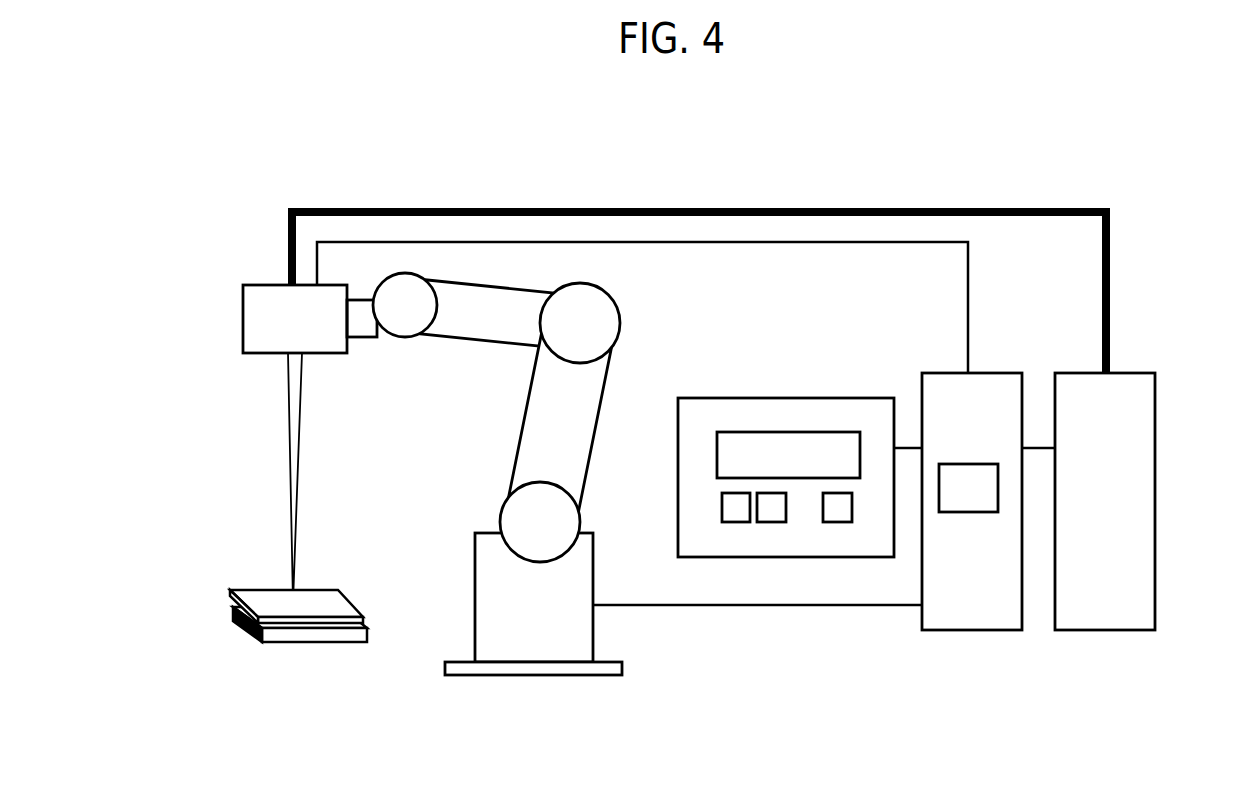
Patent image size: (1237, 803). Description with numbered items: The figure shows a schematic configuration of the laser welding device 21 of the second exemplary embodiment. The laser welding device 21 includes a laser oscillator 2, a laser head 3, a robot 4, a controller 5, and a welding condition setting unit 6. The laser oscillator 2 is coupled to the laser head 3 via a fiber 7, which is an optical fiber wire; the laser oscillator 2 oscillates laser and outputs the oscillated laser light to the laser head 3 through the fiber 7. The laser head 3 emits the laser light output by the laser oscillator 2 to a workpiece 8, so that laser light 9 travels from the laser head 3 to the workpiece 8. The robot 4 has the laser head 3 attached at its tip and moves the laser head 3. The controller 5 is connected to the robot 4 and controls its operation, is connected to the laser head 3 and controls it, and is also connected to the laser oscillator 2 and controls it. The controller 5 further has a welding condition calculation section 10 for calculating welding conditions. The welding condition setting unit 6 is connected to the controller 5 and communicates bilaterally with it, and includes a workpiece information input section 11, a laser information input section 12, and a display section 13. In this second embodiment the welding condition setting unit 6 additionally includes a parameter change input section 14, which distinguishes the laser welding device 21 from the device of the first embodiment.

The laser oscillator 2 is at (1137, 372).
The laser head 3 is at (260, 283).
The robot 4 is at (630, 320).
The controller 5 is at (1003, 372).
The welding condition setting unit 6 is at (859, 397).
The fiber 7 is at (702, 208).
The workpiece 8 is at (218, 592).
The laser light 9 is at (282, 449).
The welding condition calculation section 10 is at (962, 464).
The workpiece information input section 11 is at (730, 512).
The laser information input section 12 is at (768, 512).
The display section 13 is at (760, 443).
The parameter change input section 14 is at (835, 512).
The laser welding device 21 is at (1222, 158).